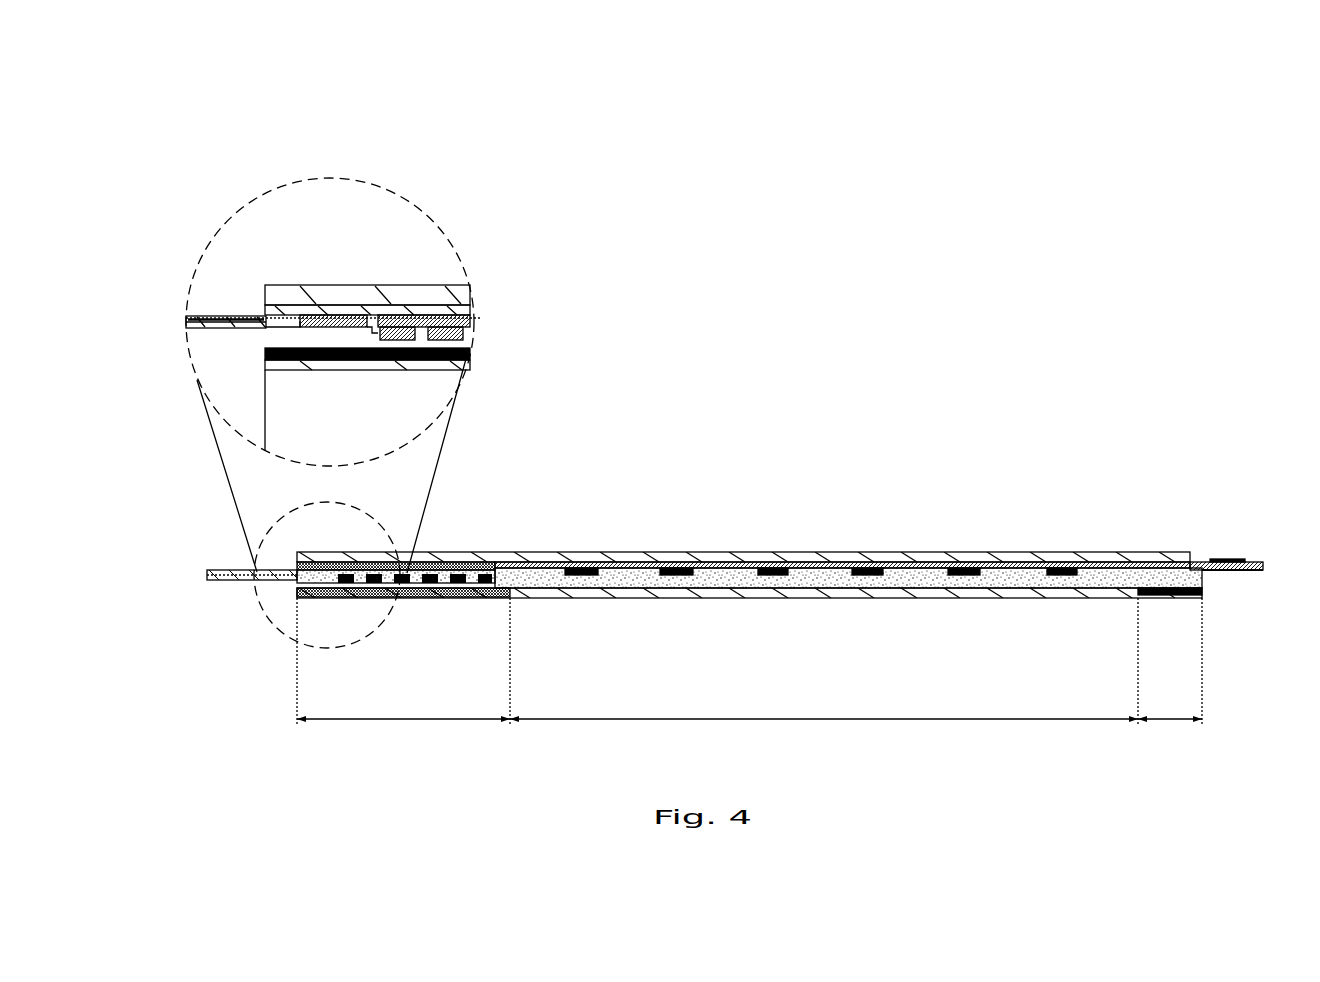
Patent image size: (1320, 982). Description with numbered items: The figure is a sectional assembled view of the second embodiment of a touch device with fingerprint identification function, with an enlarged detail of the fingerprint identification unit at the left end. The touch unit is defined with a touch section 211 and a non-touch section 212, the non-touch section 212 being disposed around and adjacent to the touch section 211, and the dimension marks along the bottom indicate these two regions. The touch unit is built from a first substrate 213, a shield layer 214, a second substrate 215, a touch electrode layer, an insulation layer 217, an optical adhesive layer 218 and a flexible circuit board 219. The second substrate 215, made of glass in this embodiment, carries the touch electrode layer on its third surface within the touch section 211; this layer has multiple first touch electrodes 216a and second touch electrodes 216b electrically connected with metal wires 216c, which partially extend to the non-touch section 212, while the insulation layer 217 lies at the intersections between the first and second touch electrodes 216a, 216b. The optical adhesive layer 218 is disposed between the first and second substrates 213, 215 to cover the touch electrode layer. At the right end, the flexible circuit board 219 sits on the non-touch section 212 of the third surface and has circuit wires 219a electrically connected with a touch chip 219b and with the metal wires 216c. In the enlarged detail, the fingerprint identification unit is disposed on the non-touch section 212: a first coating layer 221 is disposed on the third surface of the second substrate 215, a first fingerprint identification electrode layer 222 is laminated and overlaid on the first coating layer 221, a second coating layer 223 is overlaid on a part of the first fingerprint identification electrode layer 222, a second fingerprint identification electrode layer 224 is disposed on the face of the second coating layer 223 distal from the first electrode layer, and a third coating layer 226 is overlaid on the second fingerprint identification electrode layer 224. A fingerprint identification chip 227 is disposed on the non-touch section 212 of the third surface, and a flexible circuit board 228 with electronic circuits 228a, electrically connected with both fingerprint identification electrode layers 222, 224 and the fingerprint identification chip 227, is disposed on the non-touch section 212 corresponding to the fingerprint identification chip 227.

The touch section 211 is at (625, 700).
The non-touch section 212 is at (433, 700).
The first substrate 213 is at (902, 592).
The shield layer 214 is at (412, 338).
The second substrate 215 is at (368, 305).
The first touch electrodes 216a is at (633, 566).
The second touch electrodes 216b is at (790, 568).
The metal wires 216c is at (1150, 565).
The insulation layer 217 is at (693, 568).
The optical adhesive layer 218 is at (857, 562).
The flexible circuit board 219 is at (1263, 569).
The circuit wires 219a is at (1205, 572).
The touch chip 219b is at (1230, 561).
The first coating layer 221 is at (302, 305).
The first fingerprint identification electrode layer 222 is at (473, 315).
The second coating layer 223 is at (467, 332).
The second fingerprint identification electrode layer 224 is at (470, 353).
The third coating layer 226 is at (467, 363).
The fingerprint identification chip 227 is at (297, 327).
The flexible circuit board 228 is at (197, 316).
The electronic circuits 228a is at (232, 318).